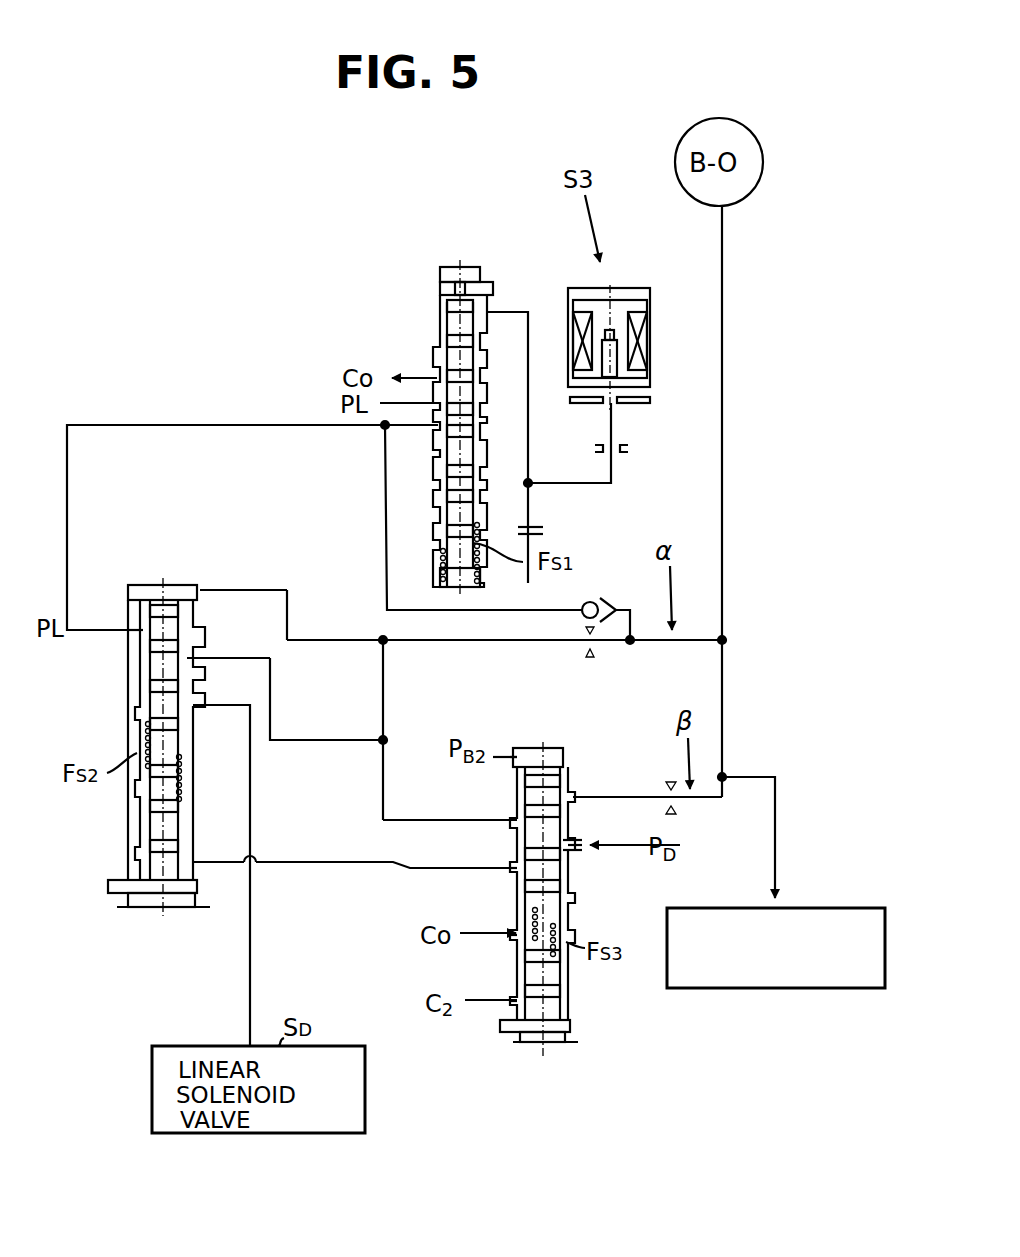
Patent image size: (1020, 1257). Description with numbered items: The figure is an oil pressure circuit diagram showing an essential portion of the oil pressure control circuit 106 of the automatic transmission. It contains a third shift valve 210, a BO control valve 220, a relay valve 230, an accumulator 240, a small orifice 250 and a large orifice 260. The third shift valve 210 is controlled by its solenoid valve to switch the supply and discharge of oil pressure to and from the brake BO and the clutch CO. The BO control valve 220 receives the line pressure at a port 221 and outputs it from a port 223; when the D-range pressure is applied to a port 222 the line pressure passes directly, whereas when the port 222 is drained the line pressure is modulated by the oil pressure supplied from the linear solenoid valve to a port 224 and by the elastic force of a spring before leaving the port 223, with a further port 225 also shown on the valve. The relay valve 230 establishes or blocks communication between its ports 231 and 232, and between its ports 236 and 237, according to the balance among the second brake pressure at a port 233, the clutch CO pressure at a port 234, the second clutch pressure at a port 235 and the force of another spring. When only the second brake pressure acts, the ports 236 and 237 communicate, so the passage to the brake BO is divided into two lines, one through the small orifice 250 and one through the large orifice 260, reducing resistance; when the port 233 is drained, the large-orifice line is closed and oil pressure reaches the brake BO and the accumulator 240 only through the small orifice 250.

The oil pressure control circuit 106 is at (272, 240).
The third shift valve 210 is at (395, 297).
The BO control valve 220 is at (148, 562).
The port 221 is at (125, 642).
The port 222 is at (193, 866).
The port 223 is at (195, 658).
The port 224 is at (197, 712).
The port 225 is at (200, 590).
The relay valve 230 is at (588, 978).
The port 231 is at (515, 869).
The port 232 is at (575, 848).
The port 233 is at (513, 757).
The port 234 is at (518, 940).
The port 235 is at (515, 1003).
The port 236 is at (517, 820).
The port 237 is at (573, 795).
The accumulator 240 is at (815, 917).
The small orifice 250 is at (596, 652).
The large orifice 260 is at (678, 803).